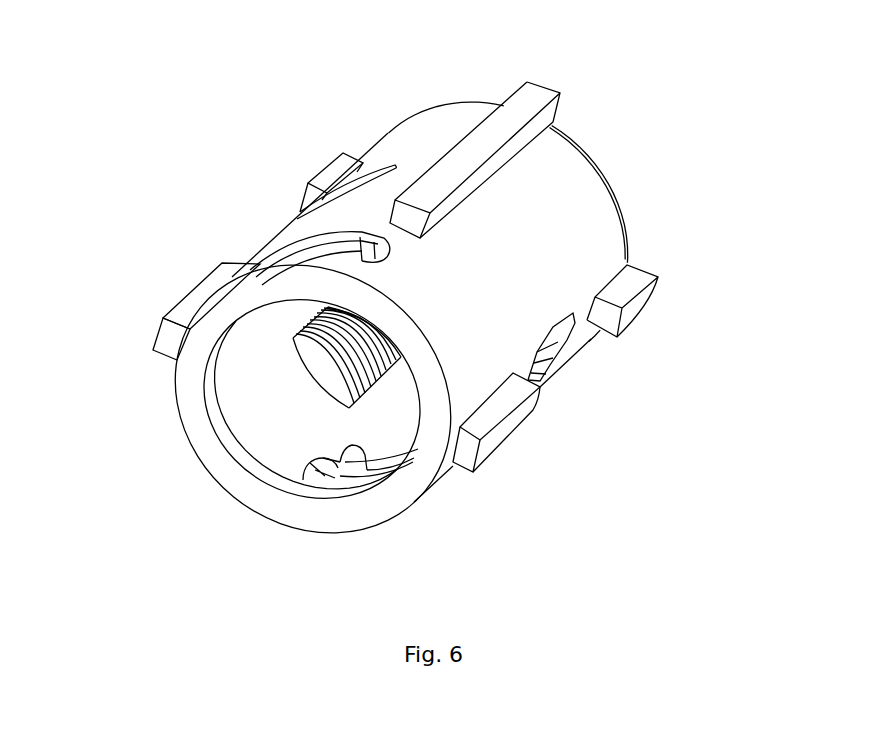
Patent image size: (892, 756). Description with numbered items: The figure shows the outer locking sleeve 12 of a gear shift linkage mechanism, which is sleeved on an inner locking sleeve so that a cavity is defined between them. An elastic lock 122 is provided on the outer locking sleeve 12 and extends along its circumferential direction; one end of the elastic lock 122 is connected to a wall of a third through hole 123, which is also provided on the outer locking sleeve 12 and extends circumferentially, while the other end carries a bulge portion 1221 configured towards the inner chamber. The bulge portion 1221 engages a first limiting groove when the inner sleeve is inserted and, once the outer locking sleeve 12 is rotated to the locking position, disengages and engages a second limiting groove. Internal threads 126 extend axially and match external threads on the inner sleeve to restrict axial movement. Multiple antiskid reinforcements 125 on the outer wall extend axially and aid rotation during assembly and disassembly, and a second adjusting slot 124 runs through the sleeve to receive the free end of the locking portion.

The outer locking sleeve 12 is at (412, 152).
The elastic lock 122 is at (260, 260).
The third through hole 123 is at (307, 236).
The second adjusting slot 124 is at (347, 178).
The antiskid reinforcements 125 is at (187, 297).
The internal threads 126 is at (388, 361).
The bulge portion 1221 is at (343, 475).